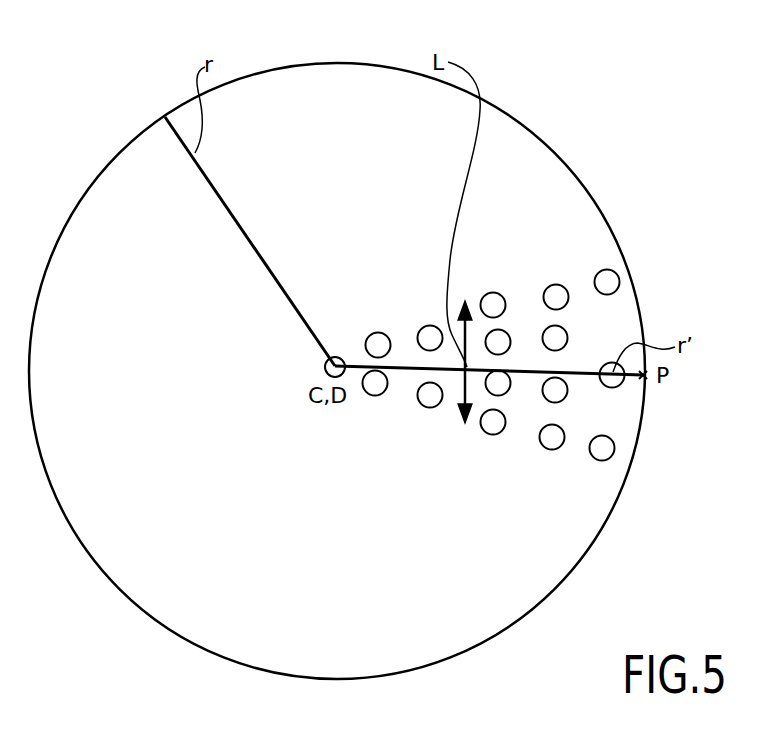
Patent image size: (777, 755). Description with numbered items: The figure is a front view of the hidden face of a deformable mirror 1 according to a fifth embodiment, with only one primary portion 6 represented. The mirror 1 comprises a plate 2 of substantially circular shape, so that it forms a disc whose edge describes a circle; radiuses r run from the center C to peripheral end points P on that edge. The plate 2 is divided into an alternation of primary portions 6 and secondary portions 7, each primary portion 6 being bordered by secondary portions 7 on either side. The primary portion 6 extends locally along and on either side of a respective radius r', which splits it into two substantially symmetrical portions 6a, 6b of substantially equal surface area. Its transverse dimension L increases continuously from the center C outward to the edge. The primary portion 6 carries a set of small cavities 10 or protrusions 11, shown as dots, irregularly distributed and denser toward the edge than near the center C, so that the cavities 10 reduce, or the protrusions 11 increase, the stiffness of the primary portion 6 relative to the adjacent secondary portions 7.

The deformable mirror 1 is at (599, 72).
The plate 2 is at (120, 200).
The primary portion 6 is at (537, 413).
The portion 6a is at (590, 427).
The portion 6b is at (528, 317).
The secondary portion 7 is at (507, 220).
The cavities 10 is at (644, 301).
The protrusions 11 is at (558, 300).